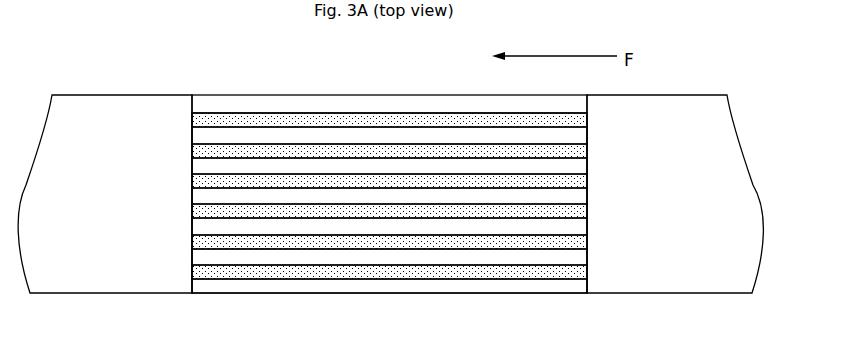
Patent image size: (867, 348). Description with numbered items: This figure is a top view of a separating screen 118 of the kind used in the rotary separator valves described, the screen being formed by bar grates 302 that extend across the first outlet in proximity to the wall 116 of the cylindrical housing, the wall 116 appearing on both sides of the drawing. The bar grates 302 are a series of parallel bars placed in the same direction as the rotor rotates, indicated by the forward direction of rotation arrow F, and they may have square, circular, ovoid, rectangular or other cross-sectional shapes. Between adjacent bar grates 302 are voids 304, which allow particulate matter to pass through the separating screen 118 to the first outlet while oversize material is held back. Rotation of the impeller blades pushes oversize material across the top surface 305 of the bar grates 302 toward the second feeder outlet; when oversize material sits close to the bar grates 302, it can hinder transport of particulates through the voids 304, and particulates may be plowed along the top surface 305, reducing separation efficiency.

The wall 116 is at (390, 194).
The separating screen 118 is at (398, 196).
The bar grates 302 is at (255, 243).
The voids 304 is at (510, 253).
The top surface 305 is at (364, 111).